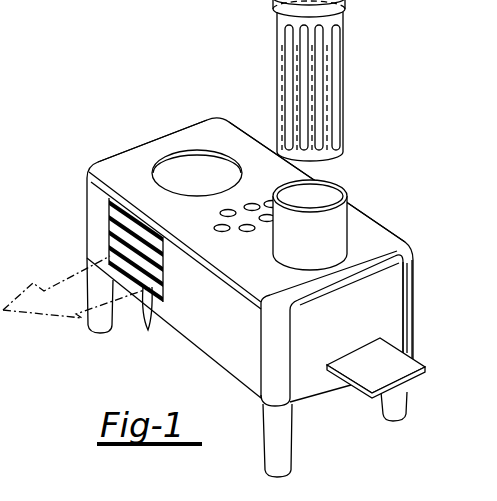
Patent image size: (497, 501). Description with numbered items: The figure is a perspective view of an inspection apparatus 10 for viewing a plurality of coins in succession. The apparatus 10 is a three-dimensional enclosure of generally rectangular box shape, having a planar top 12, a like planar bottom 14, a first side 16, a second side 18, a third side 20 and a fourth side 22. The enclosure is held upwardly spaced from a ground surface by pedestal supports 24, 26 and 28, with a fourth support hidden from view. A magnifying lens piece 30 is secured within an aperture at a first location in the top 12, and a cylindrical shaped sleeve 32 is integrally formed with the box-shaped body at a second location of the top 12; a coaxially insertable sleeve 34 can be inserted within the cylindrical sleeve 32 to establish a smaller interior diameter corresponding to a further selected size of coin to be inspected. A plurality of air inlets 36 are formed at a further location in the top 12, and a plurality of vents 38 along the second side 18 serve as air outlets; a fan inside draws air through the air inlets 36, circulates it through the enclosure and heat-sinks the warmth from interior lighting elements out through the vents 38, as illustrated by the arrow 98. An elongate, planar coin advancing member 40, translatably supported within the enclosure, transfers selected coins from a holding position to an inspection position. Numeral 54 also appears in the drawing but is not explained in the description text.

The inspection apparatus 10 is at (195, 102).
The top 12 is at (281, 291).
The bottom 14 is at (248, 387).
The first side 16 is at (350, 331).
The second side 18 is at (205, 300).
The third side 20 is at (145, 145).
The fourth side 22 is at (386, 228).
The pedestal support 24 is at (99, 337).
The pedestal support 26 is at (278, 443).
The pedestal support 28 is at (394, 420).
The magnifying lens piece 30 is at (207, 186).
The cylindrical shaped sleeve 32 is at (322, 248).
The coaxially insertable sleeve 34 is at (340, 80).
The air inlets 36 is at (229, 208).
The vents 38 is at (149, 325).
The coin advancing member 40 is at (382, 358).
The shelf edge 54 is at (416, 378).
The arrow 98 is at (80, 287).